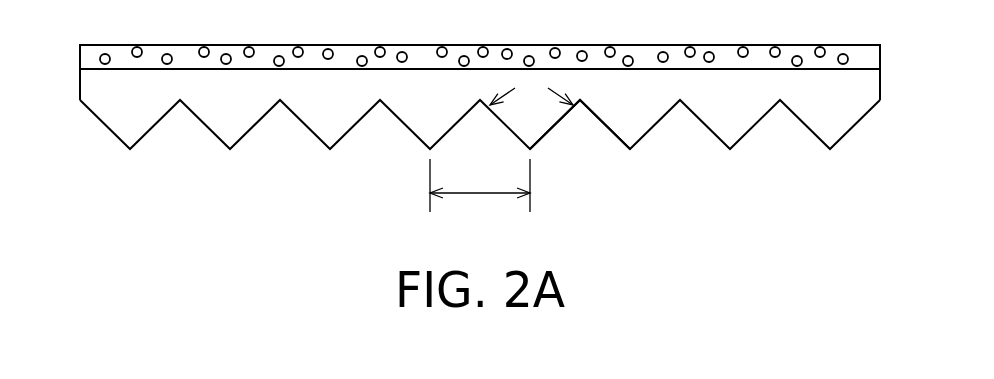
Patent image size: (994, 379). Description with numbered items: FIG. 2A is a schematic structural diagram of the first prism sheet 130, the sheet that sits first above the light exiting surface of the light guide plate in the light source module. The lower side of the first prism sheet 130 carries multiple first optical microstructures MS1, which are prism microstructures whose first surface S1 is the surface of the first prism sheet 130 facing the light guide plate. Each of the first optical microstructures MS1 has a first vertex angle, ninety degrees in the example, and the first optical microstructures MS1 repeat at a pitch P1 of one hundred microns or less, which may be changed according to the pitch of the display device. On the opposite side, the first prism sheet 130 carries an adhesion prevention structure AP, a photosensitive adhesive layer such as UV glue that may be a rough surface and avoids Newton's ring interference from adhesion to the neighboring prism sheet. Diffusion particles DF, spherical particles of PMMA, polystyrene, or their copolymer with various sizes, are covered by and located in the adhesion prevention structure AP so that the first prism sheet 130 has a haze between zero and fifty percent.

The first prism sheet 130 is at (905, 223).
The adhesion prevention structure AP is at (86, 53).
The diffusion particle DF is at (849, 59).
The first optical microstructures MS1 is at (380, 173).
The first surface S1 is at (552, 128).
The pitch P1 is at (480, 185).